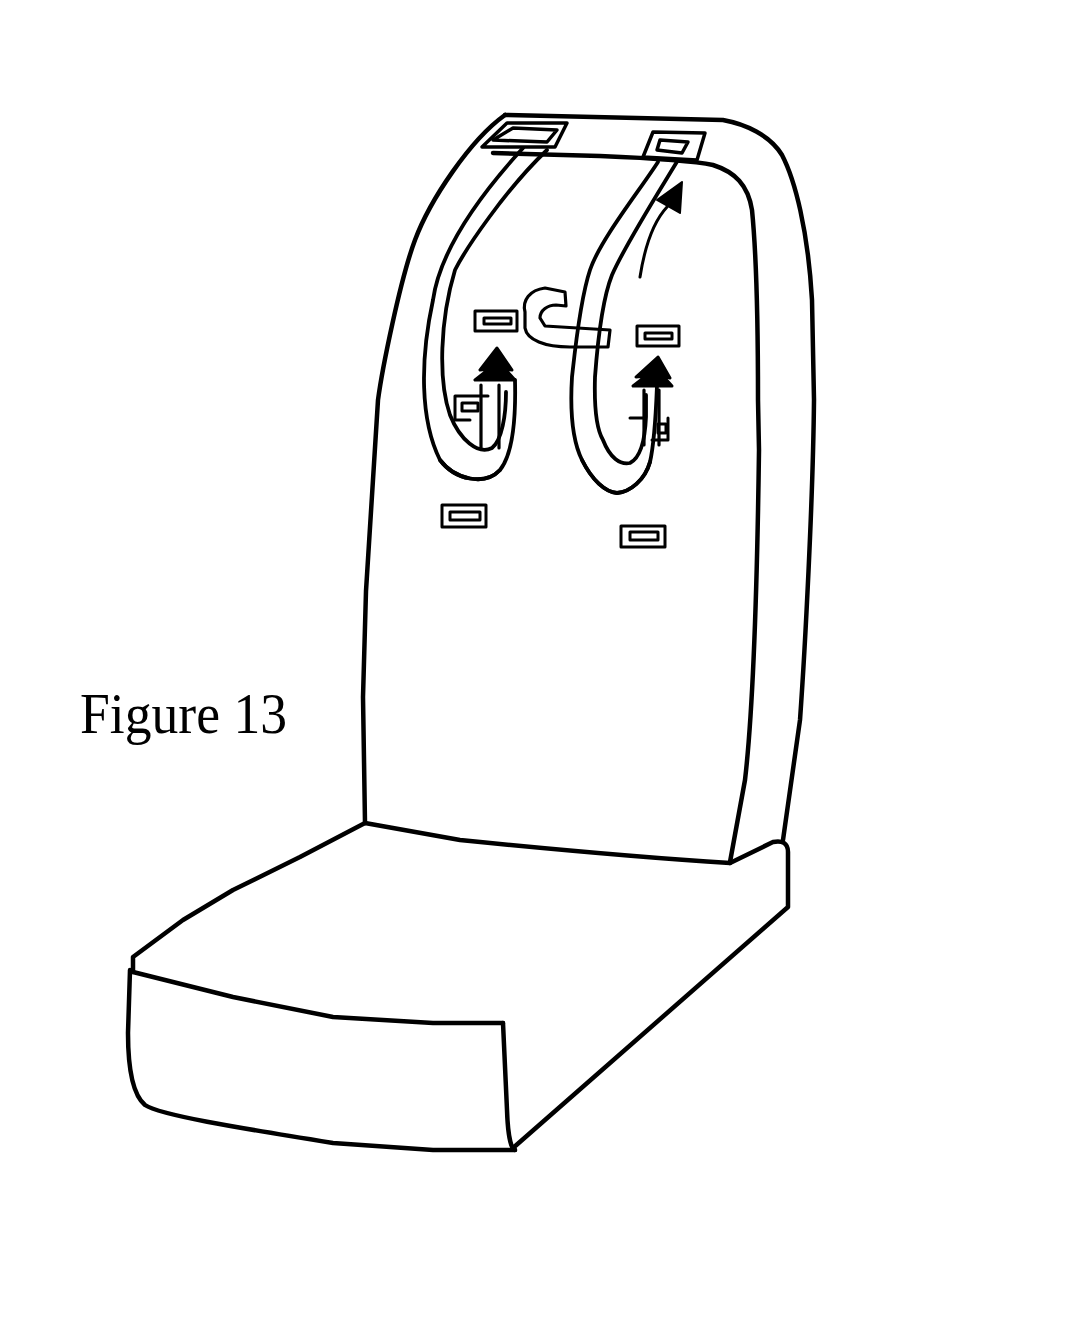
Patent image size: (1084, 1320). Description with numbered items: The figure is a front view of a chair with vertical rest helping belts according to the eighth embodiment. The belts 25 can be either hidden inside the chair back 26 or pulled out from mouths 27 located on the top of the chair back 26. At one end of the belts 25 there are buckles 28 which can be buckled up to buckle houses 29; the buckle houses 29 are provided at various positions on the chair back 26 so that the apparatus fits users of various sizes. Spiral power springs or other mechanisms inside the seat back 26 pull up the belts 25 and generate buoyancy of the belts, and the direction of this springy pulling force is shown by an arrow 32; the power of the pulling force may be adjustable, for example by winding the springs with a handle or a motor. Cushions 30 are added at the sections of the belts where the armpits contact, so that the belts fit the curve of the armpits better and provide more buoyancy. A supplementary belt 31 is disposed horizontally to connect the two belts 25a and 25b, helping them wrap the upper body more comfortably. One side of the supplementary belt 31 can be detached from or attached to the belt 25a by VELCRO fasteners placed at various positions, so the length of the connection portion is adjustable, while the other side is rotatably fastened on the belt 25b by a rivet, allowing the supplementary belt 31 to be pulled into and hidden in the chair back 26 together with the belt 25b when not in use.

The belts 25 is at (618, 311).
The belt 25a is at (497, 186).
The belt 25b is at (698, 161).
The chair back 26 is at (796, 572).
The mouths 27 is at (648, 115).
The buckles 28 is at (485, 374).
The buckle houses 29 is at (440, 512).
The cushions 30 is at (632, 478).
The supplementary belt 31 is at (553, 290).
The arrow 32 is at (674, 229).